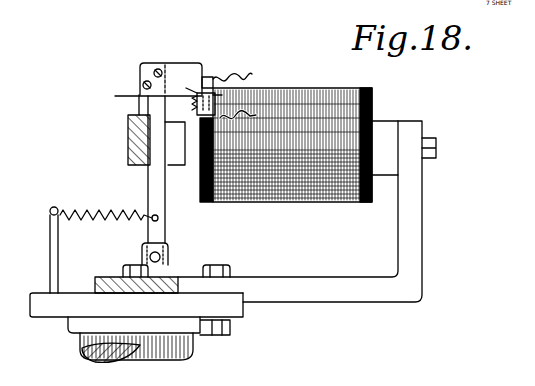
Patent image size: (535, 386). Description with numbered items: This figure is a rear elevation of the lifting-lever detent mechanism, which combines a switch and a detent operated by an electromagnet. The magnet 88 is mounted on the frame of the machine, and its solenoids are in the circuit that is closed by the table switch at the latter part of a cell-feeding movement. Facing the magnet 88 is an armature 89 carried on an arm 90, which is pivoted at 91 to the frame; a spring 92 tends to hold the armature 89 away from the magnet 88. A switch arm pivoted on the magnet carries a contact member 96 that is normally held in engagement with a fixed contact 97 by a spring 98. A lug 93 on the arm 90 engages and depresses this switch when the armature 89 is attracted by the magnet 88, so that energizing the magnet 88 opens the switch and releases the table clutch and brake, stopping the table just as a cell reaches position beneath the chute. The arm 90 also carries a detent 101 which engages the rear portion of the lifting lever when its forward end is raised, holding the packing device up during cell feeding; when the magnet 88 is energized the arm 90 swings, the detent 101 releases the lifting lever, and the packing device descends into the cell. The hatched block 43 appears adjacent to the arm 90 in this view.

The hatched block 43 is at (138, 148).
The magnet 88 is at (305, 200).
The armature 89 is at (175, 148).
The arm 90 is at (165, 212).
The pivot 91 is at (159, 258).
The spring 92 is at (103, 225).
The lug 93 is at (168, 66).
The contact member 96 is at (216, 96).
The fixed contact 97 is at (208, 78).
The spring 98 is at (182, 86).
The detent 101 is at (141, 94).